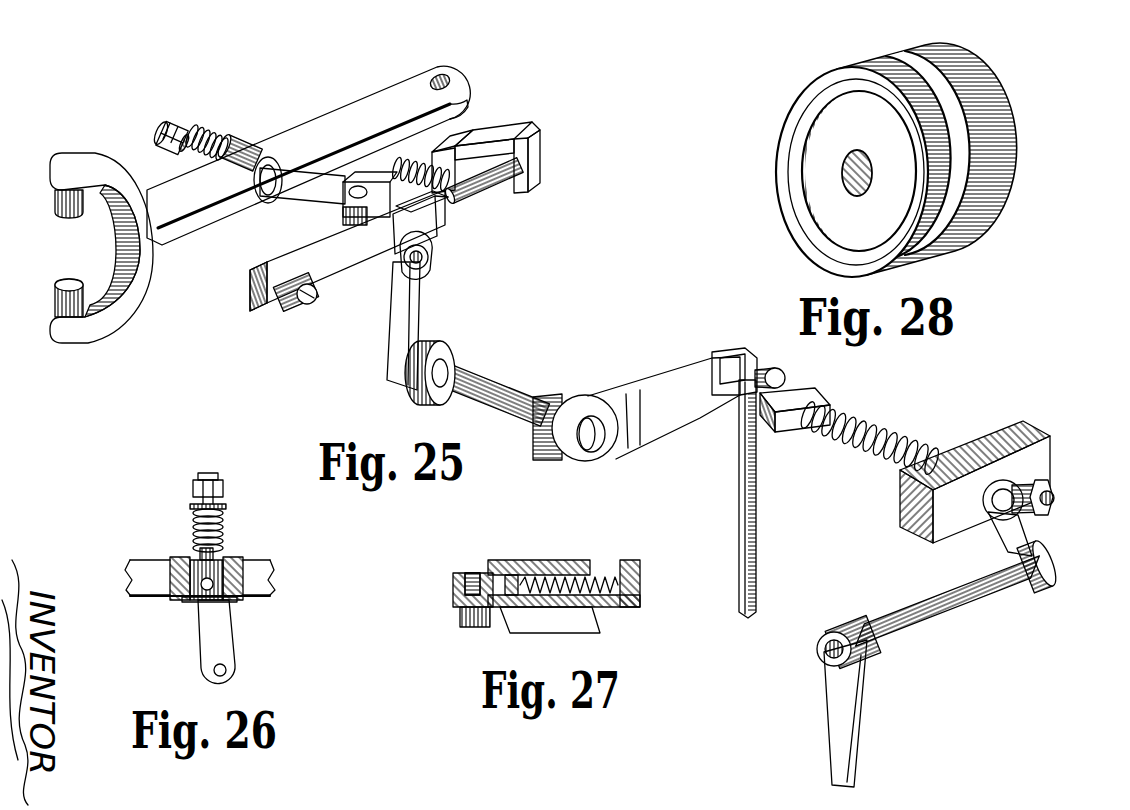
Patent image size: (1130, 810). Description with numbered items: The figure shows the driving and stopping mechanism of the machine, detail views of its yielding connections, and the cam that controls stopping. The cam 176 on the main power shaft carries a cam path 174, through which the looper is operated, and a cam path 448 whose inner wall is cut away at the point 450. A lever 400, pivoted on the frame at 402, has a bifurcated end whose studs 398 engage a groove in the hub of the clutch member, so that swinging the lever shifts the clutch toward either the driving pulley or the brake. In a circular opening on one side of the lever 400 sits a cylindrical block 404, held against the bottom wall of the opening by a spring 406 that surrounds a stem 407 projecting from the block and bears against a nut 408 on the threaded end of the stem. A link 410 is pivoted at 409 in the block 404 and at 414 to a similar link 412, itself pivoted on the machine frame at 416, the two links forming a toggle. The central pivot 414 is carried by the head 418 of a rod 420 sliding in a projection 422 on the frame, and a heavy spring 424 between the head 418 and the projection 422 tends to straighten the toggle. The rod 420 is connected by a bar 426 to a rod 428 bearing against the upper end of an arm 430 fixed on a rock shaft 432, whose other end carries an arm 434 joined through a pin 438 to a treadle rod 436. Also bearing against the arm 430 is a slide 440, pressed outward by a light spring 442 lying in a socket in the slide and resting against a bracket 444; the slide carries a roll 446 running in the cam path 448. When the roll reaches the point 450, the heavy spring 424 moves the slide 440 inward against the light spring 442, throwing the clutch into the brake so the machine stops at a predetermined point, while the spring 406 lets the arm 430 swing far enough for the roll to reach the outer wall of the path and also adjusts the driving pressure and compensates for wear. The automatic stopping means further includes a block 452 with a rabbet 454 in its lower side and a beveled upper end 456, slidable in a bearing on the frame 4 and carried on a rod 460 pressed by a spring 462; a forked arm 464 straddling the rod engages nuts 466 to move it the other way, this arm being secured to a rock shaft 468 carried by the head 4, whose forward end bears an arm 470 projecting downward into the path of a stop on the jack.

In FIG. 25, the frame 4 is at (1035, 450).
In FIG. 28, the cam path 174 is at (970, 120).
In FIG. 28, the cam 176 is at (997, 137).
In FIG. 25, the studs 398 is at (66, 286).
In FIG. 25, the lever 400 is at (190, 212).
In FIG. 26, the lever 400 is at (262, 580).
In FIG. 25, the pivot 402 is at (433, 76).
In FIG. 25, the cylindrical block 404 is at (268, 204).
In FIG. 26, the cylindrical block 404 is at (243, 566).
In FIG. 25, the spring 406 is at (212, 138).
In FIG. 26, the spring 406 is at (225, 525).
In FIG. 25, the stem 407 is at (215, 162).
In FIG. 26, the stem 407 is at (198, 556).
In FIG. 25, the nut 408 is at (180, 128).
In FIG. 26, the nut 408 is at (225, 495).
In FIG. 26, the pivot 409 is at (212, 588).
In FIG. 25, the link 410 is at (288, 174).
In FIG. 26, the link 410 is at (222, 642).
In FIG. 25, the link 412 is at (428, 256).
In FIG. 25, the central pivot 414 is at (346, 200).
In FIG. 26, the central pivot 414 is at (228, 670).
In FIG. 25, the pivot 416 is at (430, 267).
In FIG. 25, the head 418 is at (370, 180).
In FIG. 25, the rod 420 is at (500, 147).
In FIG. 25, the projection 422 is at (468, 138).
In FIG. 25, the spring 424 is at (425, 162).
In FIG. 25, the bar 426 is at (538, 168).
In FIG. 25, the rod 428 is at (482, 190).
In FIG. 25, the arm 430 is at (438, 212).
In FIG. 25, the rock shaft 432 is at (480, 378).
In FIG. 25, the arm 434 is at (650, 378).
In FIG. 25, the treadle rod 436 is at (736, 487).
In FIG. 25, the pin 438 is at (773, 372).
In FIG. 25, the slide 440 is at (345, 270).
In FIG. 27, the slide 440 is at (642, 582).
In FIG. 27, the light spring 442 is at (607, 575).
In FIG. 27, the bracket 444 is at (536, 560).
In FIG. 25, the roll 446 is at (297, 310).
In FIG. 27, the roll 446 is at (462, 626).
In FIG. 28, the cam path 448 is at (812, 214).
In FIG. 28, the recess 450 is at (842, 160).
In FIG. 25, the block 452 is at (792, 426).
In FIG. 25, the rabbet 454 is at (765, 412).
In FIG. 25, the beveled upper end 456 is at (742, 392).
In FIG. 25, the rod 460 is at (925, 447).
In FIG. 25, the spring 462 is at (868, 422).
In FIG. 25, the forked arm 464 is at (1000, 520).
In FIG. 25, the nuts 466 is at (1050, 490).
In FIG. 25, the rock shaft 468 is at (935, 614).
In FIG. 25, the arm 470 is at (862, 672).